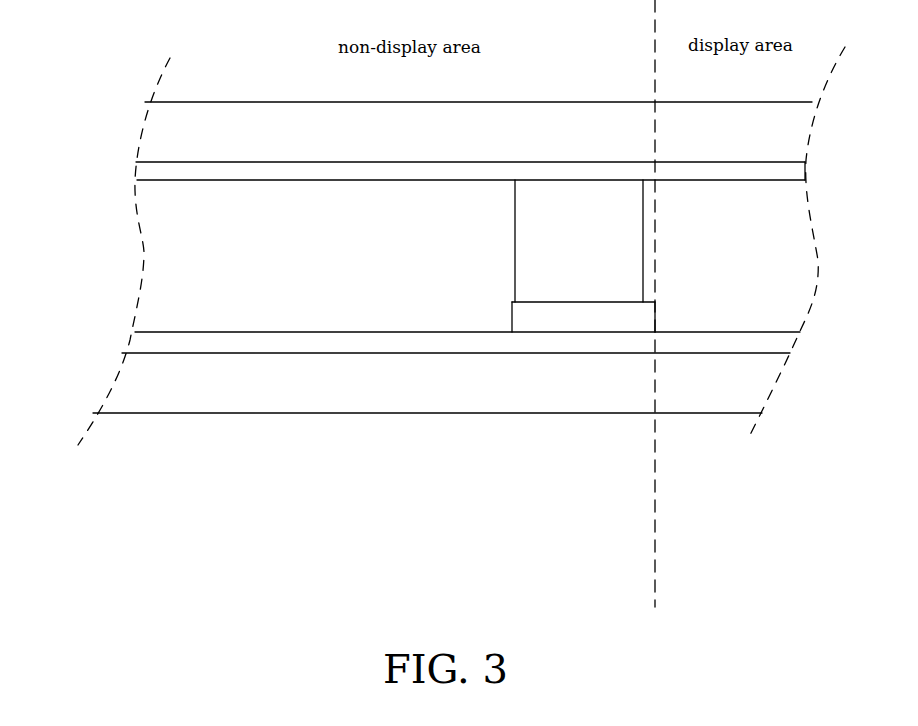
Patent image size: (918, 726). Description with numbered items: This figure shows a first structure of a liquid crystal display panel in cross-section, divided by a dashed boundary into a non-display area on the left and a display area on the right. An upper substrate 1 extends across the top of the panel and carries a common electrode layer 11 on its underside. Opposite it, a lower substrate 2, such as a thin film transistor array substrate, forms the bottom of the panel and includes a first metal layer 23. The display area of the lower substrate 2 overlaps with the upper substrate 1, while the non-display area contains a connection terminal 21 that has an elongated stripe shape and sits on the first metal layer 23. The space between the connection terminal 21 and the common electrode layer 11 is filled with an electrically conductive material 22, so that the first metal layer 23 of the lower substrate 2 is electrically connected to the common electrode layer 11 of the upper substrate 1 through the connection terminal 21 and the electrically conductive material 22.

The upper substrate 1 is at (157, 140).
The common electrode layer 11 is at (158, 175).
The lower substrate 2 is at (168, 404).
The first metal layer 23 is at (158, 347).
The electrically conductive material 22 is at (545, 248).
The connection terminal 21 is at (562, 322).